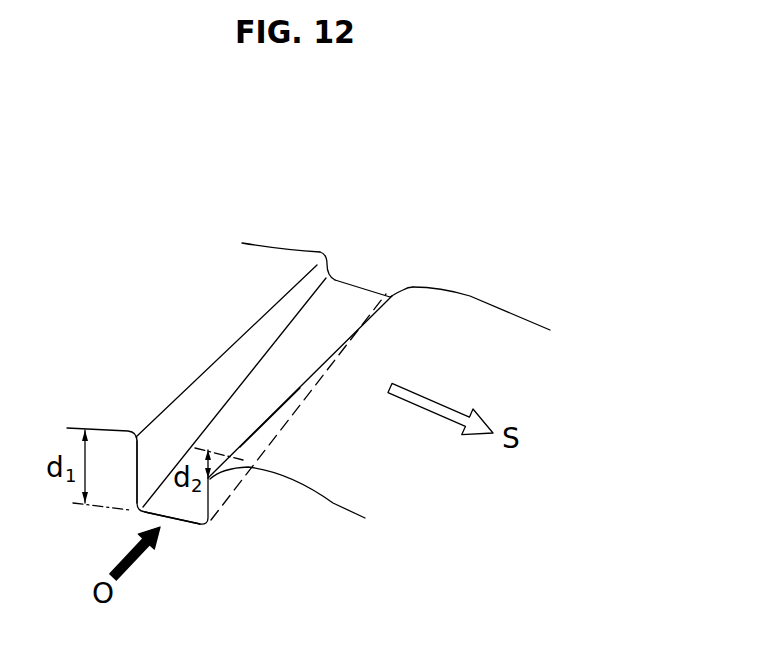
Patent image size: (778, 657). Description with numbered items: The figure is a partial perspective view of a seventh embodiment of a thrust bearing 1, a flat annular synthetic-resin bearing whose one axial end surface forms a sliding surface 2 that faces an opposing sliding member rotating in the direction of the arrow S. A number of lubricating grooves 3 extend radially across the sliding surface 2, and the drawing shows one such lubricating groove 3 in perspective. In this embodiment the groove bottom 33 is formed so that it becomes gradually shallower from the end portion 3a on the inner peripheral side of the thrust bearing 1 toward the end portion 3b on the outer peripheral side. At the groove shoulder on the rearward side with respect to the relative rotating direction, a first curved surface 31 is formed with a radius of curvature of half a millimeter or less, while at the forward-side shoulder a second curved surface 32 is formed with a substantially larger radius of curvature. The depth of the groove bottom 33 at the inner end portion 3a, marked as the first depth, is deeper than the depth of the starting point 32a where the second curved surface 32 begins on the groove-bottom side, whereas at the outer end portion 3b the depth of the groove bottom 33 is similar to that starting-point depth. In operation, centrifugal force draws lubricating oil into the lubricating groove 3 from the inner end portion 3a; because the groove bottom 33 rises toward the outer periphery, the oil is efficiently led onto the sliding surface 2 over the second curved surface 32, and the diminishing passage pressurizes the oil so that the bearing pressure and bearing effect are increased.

The thrust bearing 1 is at (553, 368).
The sliding surface 2 is at (213, 280).
The lubricating groove 3 is at (302, 305).
The end portion in the inner peripheral side 3a is at (186, 525).
The end portion in the outer peripheral side 3b is at (373, 265).
The first curved surface 31 is at (316, 260).
The second curved surface 32 is at (398, 310).
The starting point 32a is at (255, 430).
The groove bottom 33 is at (248, 397).